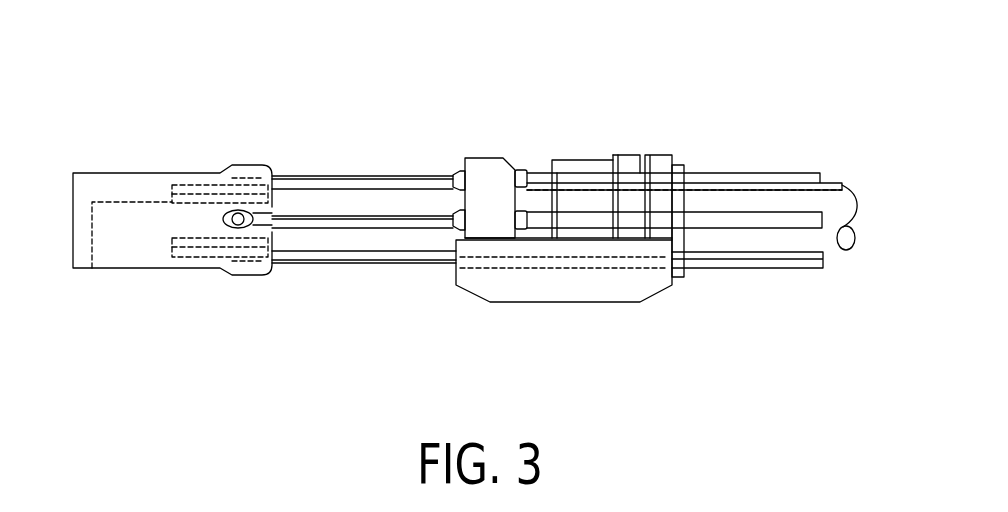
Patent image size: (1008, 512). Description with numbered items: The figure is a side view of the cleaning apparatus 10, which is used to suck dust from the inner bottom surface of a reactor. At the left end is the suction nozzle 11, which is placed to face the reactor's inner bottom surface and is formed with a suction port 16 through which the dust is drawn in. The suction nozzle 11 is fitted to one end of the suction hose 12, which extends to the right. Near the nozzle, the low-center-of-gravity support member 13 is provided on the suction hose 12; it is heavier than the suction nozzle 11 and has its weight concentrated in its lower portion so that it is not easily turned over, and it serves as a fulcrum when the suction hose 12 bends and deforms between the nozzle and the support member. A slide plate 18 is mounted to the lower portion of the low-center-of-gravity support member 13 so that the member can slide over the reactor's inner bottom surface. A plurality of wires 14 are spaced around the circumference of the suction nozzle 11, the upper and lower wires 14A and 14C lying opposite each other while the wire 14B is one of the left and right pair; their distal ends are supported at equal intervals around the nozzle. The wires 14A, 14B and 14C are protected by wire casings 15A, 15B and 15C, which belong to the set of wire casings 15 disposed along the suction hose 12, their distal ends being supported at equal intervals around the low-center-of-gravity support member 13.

The cleaning apparatus 10 is at (697, 70).
The suction nozzle 11 is at (150, 173).
The suction hose 12 is at (836, 198).
The low-center-of-gravity support member 13 is at (577, 120).
The wires 14 is at (423, 348).
The upper wire 14A is at (348, 184).
The left wire 14B is at (380, 228).
The lower wire 14C is at (417, 267).
The wire casings 15 is at (705, 348).
The wire casing 15A is at (773, 184).
The wire casing 15B is at (742, 222).
The wire casing 15C is at (705, 268).
The suction port 16 is at (137, 268).
The slide plate 18 is at (564, 303).